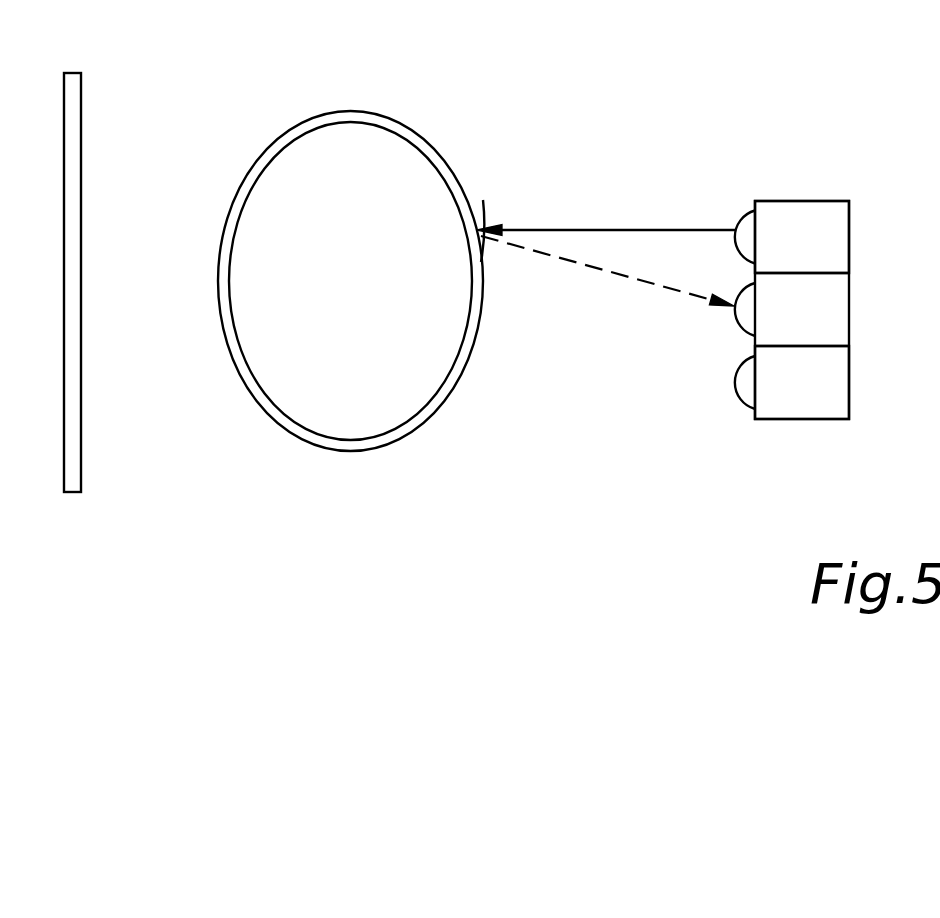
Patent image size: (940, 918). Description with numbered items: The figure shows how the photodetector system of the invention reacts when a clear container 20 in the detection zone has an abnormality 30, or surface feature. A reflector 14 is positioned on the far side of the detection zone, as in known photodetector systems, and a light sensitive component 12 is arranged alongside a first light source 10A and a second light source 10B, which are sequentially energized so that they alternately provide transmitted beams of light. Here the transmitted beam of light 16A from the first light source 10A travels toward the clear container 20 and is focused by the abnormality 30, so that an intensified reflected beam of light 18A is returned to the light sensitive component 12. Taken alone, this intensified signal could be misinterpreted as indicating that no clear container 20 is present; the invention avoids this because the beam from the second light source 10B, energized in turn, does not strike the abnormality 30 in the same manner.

The reflector 14 is at (85, 90).
The clear container 20 is at (370, 112).
The abnormality 30 is at (478, 228).
The transmitted beam of light 16A is at (607, 230).
The intensified reflected beam of light 18A is at (637, 280).
The light sensitive component 12 is at (835, 310).
The first light source 10A is at (795, 210).
The second light source 10B is at (802, 407).